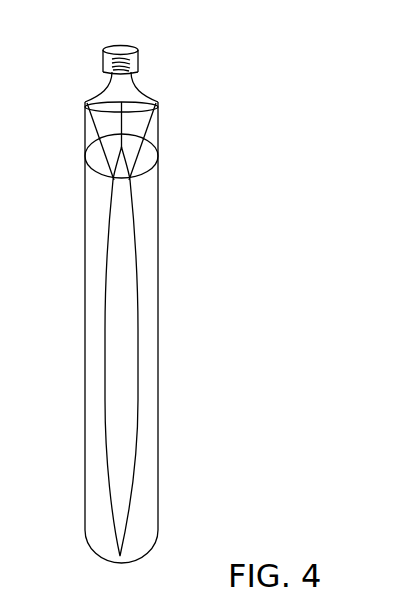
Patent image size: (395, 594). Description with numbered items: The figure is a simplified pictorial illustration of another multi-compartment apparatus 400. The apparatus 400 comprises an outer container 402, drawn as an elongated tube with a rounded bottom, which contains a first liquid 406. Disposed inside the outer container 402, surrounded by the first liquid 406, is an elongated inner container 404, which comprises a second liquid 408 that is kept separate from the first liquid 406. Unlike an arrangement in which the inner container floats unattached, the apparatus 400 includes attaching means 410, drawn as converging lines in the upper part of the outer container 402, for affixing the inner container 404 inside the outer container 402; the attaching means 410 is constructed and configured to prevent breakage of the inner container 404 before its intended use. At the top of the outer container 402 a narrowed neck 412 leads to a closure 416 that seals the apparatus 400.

The multi-compartment apparatus 400 is at (212, 305).
The outer container 402 is at (158, 192).
The inner container 404 is at (138, 248).
The first liquid 406 is at (147, 293).
The second liquid 408 is at (132, 343).
The attaching means 410 is at (97, 128).
The neck 412 is at (142, 82).
The cap 416 is at (103, 68).